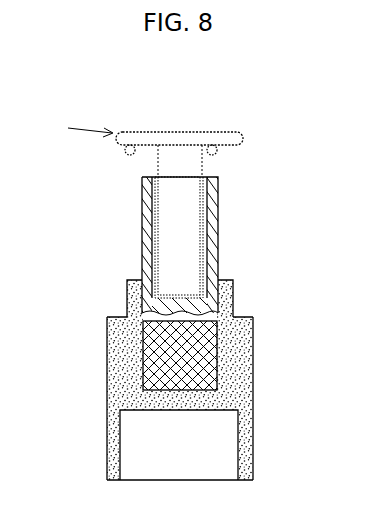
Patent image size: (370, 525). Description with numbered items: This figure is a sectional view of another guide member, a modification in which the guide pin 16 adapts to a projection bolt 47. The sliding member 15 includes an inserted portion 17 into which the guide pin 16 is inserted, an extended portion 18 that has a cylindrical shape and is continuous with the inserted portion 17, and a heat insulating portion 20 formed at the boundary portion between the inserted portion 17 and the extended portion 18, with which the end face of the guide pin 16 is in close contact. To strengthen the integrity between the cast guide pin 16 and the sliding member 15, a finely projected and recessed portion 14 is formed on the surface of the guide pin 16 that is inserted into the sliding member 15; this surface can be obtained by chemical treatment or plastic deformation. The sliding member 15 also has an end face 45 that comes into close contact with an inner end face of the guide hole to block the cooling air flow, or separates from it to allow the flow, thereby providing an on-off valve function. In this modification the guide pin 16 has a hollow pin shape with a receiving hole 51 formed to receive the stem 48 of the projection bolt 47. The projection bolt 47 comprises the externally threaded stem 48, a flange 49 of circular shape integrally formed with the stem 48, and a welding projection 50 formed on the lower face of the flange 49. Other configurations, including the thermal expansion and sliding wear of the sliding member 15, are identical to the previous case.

The projected and recessed portion 14 is at (143, 358).
The sliding member 15 is at (99, 414).
The guide pin 16 is at (142, 254).
The inserted portion 17 is at (253, 357).
The extended portion 18 is at (253, 440).
The heat insulating portion 20 is at (180, 412).
The end face 45 is at (237, 316).
The projection bolt 47 is at (76, 129).
The stem 48 is at (175, 217).
The flange 49 is at (231, 132).
The welding projection 50 is at (215, 153).
The receiving hole 51 is at (202, 242).